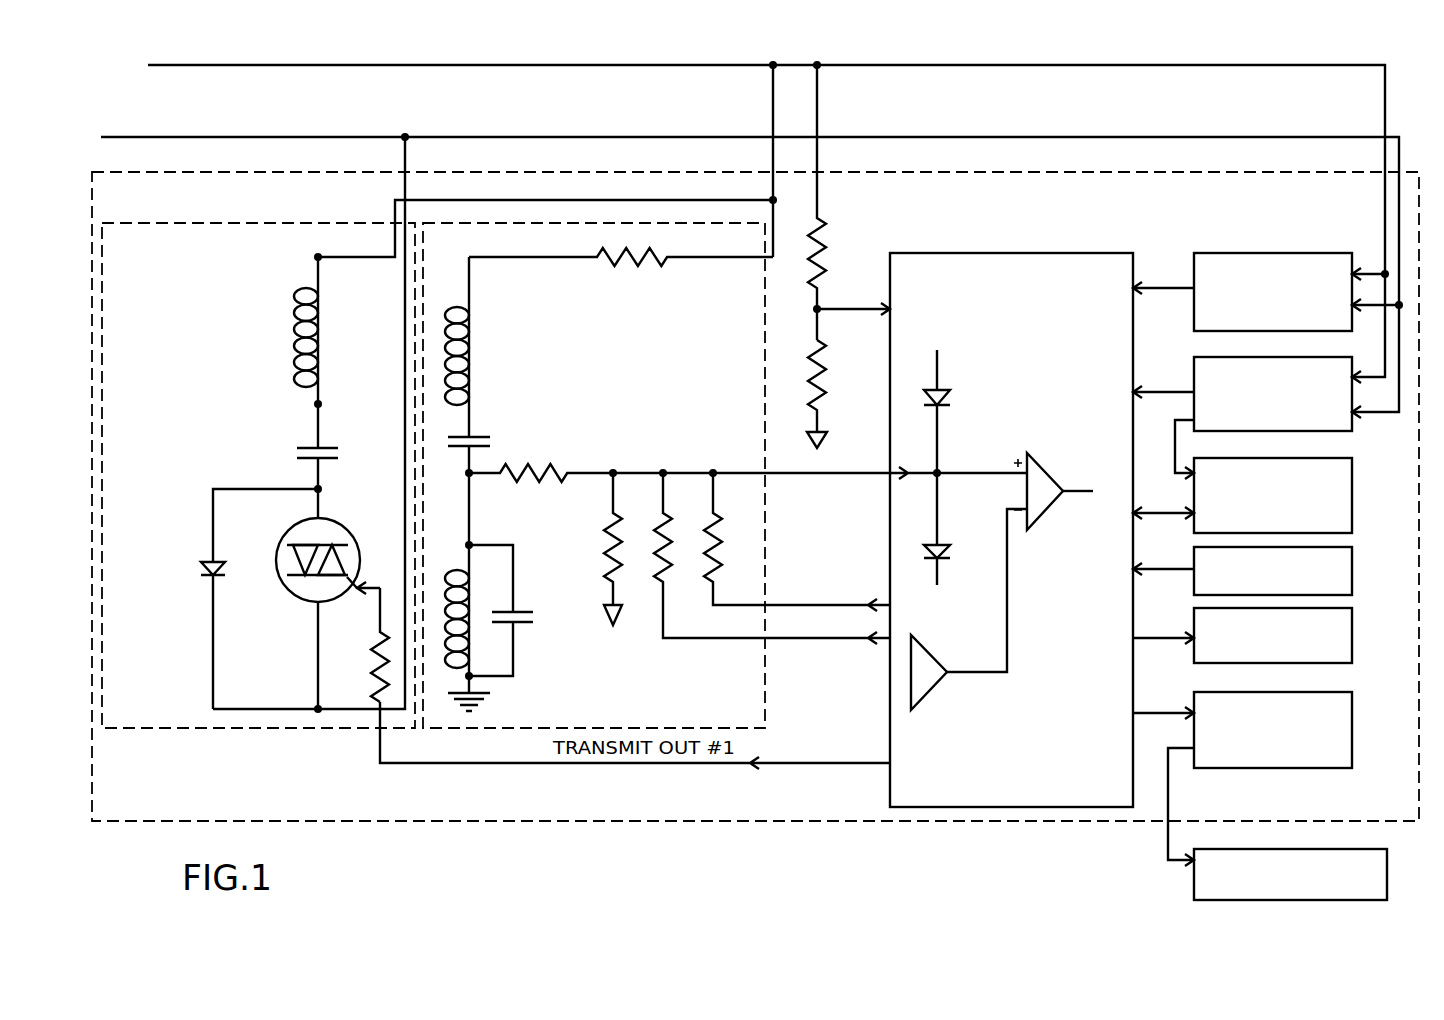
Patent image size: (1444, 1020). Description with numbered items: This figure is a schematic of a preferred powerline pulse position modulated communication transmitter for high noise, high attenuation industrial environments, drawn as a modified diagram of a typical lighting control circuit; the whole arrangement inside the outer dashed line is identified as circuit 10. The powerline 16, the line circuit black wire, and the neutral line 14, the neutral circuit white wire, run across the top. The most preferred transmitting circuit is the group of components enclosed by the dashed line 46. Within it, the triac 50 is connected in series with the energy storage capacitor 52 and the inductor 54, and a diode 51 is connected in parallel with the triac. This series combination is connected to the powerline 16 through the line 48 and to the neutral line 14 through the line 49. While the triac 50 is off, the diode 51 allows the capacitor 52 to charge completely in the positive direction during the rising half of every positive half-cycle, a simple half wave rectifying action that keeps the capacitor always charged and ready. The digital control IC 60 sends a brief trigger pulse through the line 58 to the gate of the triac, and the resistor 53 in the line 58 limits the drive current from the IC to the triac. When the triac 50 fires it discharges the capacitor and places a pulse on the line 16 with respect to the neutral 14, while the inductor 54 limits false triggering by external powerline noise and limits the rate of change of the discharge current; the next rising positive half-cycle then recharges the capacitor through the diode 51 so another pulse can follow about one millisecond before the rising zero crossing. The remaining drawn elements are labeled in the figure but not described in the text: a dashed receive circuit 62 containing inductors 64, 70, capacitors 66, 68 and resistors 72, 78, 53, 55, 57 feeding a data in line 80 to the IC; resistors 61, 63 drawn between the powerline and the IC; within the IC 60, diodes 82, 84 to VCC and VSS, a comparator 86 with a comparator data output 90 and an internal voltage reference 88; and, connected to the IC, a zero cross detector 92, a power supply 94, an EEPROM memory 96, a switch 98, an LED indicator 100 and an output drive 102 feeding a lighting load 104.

The lighting control device 10 is at (417, 822).
The neutral line 14 is at (325, 135).
The powerline 16 is at (203, 63).
The transmitting circuit 46 is at (168, 728).
The line 48 is at (393, 220).
The line 49 is at (405, 164).
The triac 50 is at (337, 525).
The diode 51 is at (215, 562).
The energy storage capacitor 52 is at (323, 445).
The resistor 53 is at (372, 645).
The inductor 54 is at (320, 317).
The resistor 55 is at (665, 517).
The resistor 57 is at (715, 517).
The line 58 is at (380, 745).
The digital control integrated circuit 60 is at (990, 252).
The resistor 61 is at (822, 222).
The receive circuit 62 is at (558, 727).
The resistor 63 is at (820, 345).
The inductor coil 64 is at (468, 318).
The capacitor 66 is at (478, 435).
The capacitor 68 is at (517, 622).
The inductor coil 70 is at (470, 638).
The resistor 72 is at (637, 265).
The resistor 78 is at (522, 478).
The data in line 80 is at (768, 472).
The diode to VCC 82 is at (948, 387).
The diode to VSS 84 is at (948, 545).
The comparator 86 is at (1042, 468).
The internal voltage reference 88 is at (937, 662).
The comparator data output 90 is at (1069, 491).
The zero cross detector 92 is at (1193, 317).
The power supply 94 is at (1193, 370).
The EEPROM memory 96 is at (1355, 520).
The switch 98 is at (1355, 582).
The LED indicator 100 is at (1355, 627).
The output drive 102 is at (1355, 722).
The lighting load 104 is at (1390, 875).